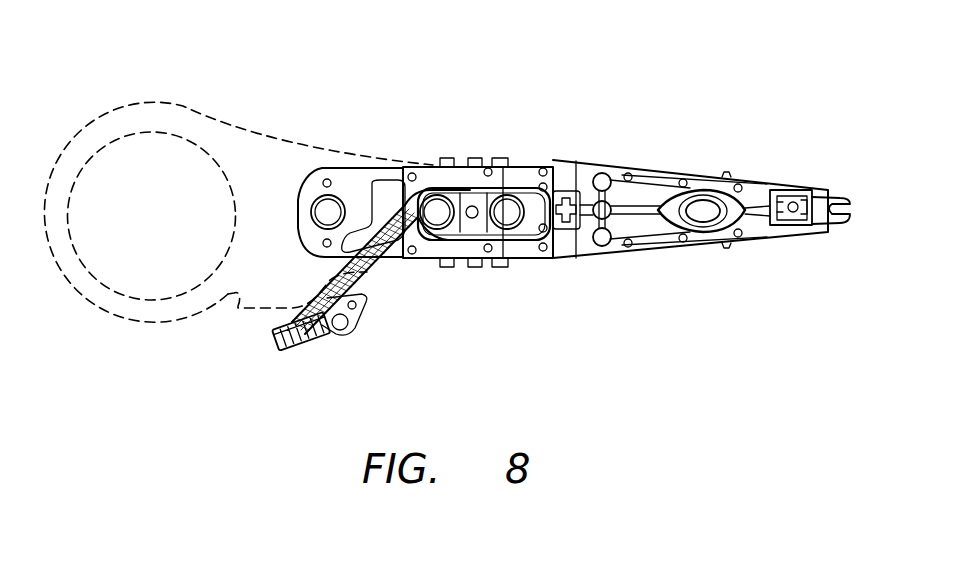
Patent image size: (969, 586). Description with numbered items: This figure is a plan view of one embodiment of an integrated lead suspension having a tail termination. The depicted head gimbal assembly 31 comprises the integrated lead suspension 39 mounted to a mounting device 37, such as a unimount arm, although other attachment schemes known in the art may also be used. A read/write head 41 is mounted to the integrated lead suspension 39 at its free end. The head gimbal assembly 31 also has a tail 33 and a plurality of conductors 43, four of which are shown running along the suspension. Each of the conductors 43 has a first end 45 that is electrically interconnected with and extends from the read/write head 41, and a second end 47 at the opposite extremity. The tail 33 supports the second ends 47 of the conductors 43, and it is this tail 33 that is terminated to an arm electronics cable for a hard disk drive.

The head gimbal assembly 31 is at (593, 63).
The tail 33 is at (298, 352).
The mounting device 37 is at (247, 152).
The integrated lead suspension 39 is at (582, 240).
The read/write head 41 is at (798, 183).
The conductors 43 is at (650, 215).
The first end 45 is at (837, 186).
The second end 47 is at (272, 343).